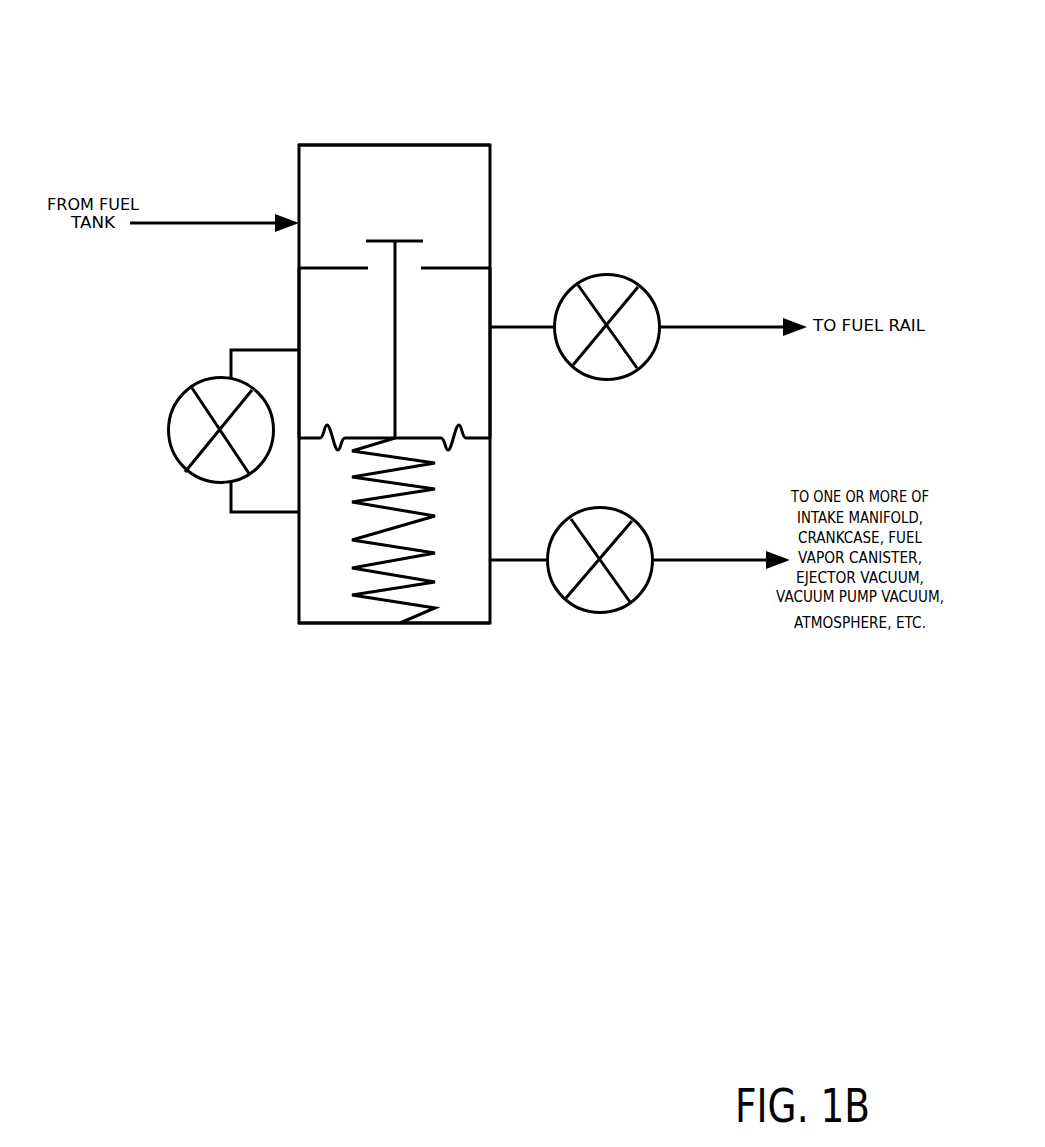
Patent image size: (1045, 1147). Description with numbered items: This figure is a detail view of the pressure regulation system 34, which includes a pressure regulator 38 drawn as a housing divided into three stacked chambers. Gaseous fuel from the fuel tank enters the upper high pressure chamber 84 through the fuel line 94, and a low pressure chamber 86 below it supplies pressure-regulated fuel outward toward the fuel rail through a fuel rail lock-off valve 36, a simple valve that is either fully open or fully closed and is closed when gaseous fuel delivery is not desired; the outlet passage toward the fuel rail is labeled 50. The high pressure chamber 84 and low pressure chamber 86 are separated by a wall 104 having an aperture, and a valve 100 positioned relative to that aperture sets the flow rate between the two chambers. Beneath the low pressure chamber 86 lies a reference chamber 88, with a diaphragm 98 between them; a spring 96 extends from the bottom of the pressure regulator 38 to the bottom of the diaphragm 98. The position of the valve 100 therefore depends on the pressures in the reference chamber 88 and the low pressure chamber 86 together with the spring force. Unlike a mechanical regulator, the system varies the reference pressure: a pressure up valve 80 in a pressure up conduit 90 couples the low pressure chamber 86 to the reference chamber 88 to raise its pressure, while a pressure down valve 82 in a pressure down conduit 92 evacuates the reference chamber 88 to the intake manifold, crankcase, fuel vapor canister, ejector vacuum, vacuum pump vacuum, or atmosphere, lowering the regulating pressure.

The pressure regulation system 34 is at (638, 78).
The fuel rail lock-off valve 36 is at (623, 276).
The pressure regulator 38 is at (585, 430).
The fuel rail conduit 50 is at (710, 325).
The pressure up valve 80 is at (212, 484).
The pressure down valve 82 is at (598, 614).
The high pressure chamber 84 is at (407, 196).
The low pressure chamber 86 is at (365, 366).
The reference chamber 88 is at (339, 531).
The pressure up conduit 90 is at (263, 349).
The pressure down conduit 92 is at (708, 559).
The fuel line 94 is at (191, 222).
The spring 96 is at (393, 606).
The diaphragm 98 is at (410, 437).
The valve 100 is at (401, 240).
The wall 104 is at (350, 269).